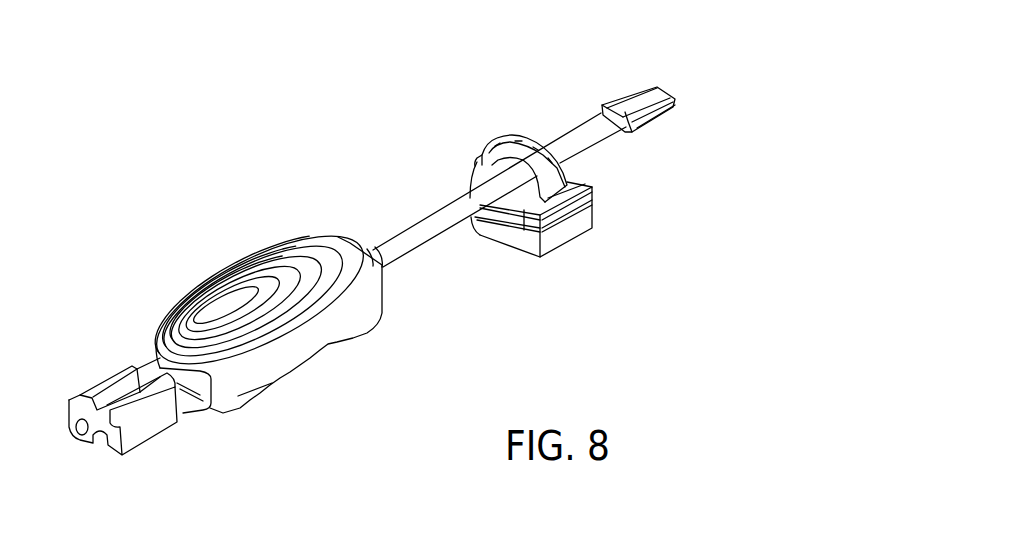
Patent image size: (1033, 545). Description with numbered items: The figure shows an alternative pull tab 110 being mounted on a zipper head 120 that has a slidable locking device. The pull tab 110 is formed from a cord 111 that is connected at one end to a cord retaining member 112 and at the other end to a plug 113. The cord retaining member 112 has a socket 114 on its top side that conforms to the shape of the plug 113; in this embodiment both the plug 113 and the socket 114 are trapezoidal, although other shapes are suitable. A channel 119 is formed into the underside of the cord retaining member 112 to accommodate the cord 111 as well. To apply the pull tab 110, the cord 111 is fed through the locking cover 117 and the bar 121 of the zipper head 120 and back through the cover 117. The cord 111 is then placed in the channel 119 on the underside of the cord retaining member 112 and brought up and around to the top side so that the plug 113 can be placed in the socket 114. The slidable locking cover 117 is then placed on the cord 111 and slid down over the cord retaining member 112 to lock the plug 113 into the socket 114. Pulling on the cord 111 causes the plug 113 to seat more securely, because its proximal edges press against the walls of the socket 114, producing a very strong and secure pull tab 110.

The pull tab 110 is at (360, 176).
The cord 111 is at (596, 138).
The cord retaining member 112 is at (157, 432).
The plug 113 is at (642, 100).
The socket 114 is at (127, 393).
The locking cover 117 is at (281, 261).
The channel 119 is at (105, 440).
The zipper head 120 is at (517, 207).
The bar 121 is at (532, 153).